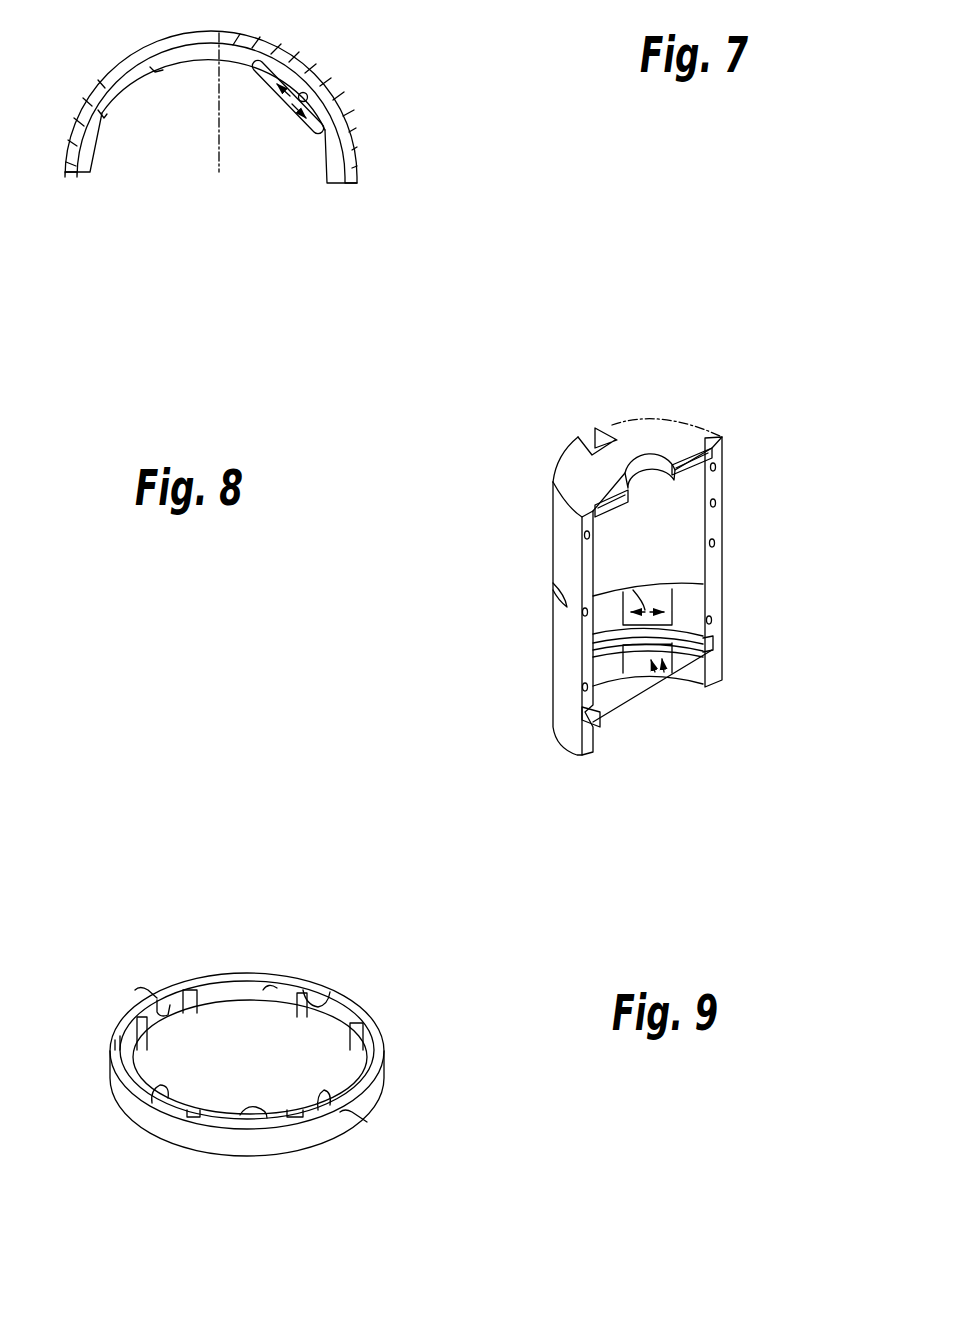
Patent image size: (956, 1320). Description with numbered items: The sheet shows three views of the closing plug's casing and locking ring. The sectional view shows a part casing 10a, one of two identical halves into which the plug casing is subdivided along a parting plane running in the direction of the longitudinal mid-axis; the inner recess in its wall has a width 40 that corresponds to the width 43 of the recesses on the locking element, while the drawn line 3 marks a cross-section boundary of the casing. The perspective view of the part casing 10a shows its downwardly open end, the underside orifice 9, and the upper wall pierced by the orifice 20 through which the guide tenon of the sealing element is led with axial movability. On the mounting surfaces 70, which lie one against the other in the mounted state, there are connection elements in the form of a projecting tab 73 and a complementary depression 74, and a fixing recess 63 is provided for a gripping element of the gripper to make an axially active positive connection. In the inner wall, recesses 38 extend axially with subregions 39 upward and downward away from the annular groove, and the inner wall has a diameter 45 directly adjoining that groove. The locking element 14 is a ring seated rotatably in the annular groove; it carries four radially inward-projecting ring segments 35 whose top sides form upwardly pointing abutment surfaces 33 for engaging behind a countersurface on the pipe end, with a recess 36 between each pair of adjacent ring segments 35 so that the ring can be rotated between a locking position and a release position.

In FIG. 7, the housing 3 is at (128, 83).
In FIG. 8, the underside orifice 9 is at (592, 738).
In FIG. 7, the part casing 10a is at (358, 162).
In FIG. 9, the locking element 14 is at (358, 991).
In FIG. 8, the orifice 20 is at (650, 468).
In FIG. 9, the abutment surface 33 is at (128, 1046).
In FIG. 9, the ring segment 35 is at (223, 996).
In FIG. 9, the recess 36 is at (163, 1005).
In FIG. 7, the recess 38 is at (288, 96).
In FIG. 8, the recess 38 is at (652, 661).
In FIG. 8, the recess 39 is at (656, 606).
In FIG. 7, the width of the recesses 40 is at (296, 96).
In FIG. 8, the width of the recesses 40 is at (625, 586).
In FIG. 9, the width of the recesses 43 is at (339, 1023).
In FIG. 8, the diameter of the inner wall 45 is at (622, 705).
In FIG. 8, the fixing recess 63 is at (585, 441).
In FIG. 8, the mounting surface 70 is at (708, 510).
In FIG. 8, the projecting tab 73 is at (714, 457).
In FIG. 8, the depression 74 is at (605, 500).